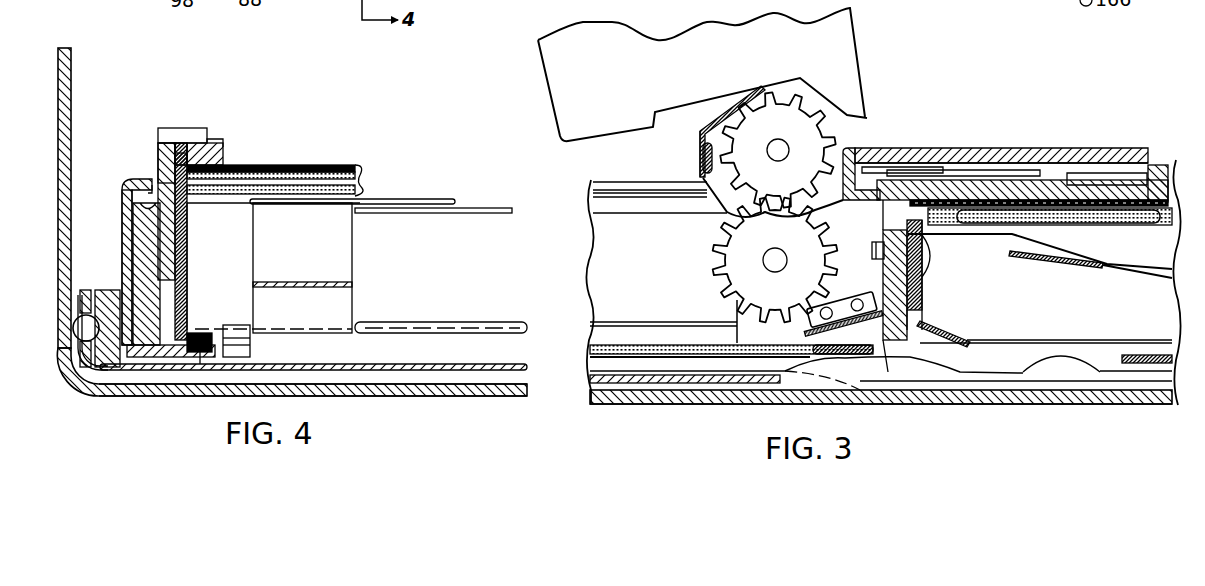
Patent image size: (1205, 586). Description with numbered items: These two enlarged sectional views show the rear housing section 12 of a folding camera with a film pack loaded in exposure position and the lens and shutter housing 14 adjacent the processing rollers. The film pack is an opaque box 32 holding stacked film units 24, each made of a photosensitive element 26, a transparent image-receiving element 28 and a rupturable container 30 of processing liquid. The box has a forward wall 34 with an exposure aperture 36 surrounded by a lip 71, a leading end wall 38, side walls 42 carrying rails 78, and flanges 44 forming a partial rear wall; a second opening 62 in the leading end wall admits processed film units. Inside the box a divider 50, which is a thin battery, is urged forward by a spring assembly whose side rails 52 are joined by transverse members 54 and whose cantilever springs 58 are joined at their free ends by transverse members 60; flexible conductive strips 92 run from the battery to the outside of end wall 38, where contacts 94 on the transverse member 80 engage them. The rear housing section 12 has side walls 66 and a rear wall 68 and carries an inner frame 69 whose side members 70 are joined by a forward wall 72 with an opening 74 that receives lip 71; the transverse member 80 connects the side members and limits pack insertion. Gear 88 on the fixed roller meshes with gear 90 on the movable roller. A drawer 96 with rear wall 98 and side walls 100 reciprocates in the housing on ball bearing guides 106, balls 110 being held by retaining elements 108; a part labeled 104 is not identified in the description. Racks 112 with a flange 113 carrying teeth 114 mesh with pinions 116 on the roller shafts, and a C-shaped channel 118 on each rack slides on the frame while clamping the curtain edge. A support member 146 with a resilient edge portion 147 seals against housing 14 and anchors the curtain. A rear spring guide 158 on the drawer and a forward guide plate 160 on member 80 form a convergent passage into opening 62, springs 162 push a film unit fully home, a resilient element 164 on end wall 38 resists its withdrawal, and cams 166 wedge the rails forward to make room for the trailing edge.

In FIG. 4, the rear housing section 12 is at (148, 402).
In FIG. 3, the rear housing section 12 is at (678, 408).
In FIG. 3, the housing 14 is at (545, 85).
In FIG. 4, the film unit 24 is at (362, 168).
In FIG. 3, the film unit 24 is at (623, 340).
In FIG. 4, the photosensitive element 26 is at (312, 184).
In FIG. 3, the photosensitive element 26 is at (697, 357).
In FIG. 4, the image-receiving element 28 is at (273, 170).
In FIG. 3, the image-receiving element 28 is at (660, 345).
In FIG. 3, the rupturable container 30 is at (1097, 202).
In FIG. 4, the container 32 is at (170, 182).
In FIG. 3, the container 32 is at (1022, 197).
In FIG. 4, the forward wall 34 is at (172, 165).
In FIG. 3, the forward wall 34 is at (983, 197).
In FIG. 4, the exposure aperture 36 is at (226, 166).
In FIG. 3, the exposure aperture 36 is at (1039, 203).
In FIG. 3, the leading end wall 38 is at (922, 300).
In FIG. 4, the side walls 42 is at (187, 284).
In FIG. 4, the flanges 44 is at (200, 355).
In FIG. 3, the flanges 44 is at (1148, 368).
In FIG. 3, the divider 50 is at (1148, 258).
In FIG. 4, the side rails 52 is at (200, 345).
In FIG. 3, the side rails 52 is at (775, 384).
In FIG. 4, the transverse members 54 is at (409, 324).
In FIG. 4, the cantilever springs 58 is at (312, 263).
In FIG. 3, the cantilever springs 58 is at (1113, 268).
In FIG. 4, the transverse members 60 is at (458, 213).
In FIG. 3, the transverse members 60 is at (1058, 265).
In FIG. 3, the second opening 62 is at (958, 340).
In FIG. 4, the side walls 66 is at (58, 177).
In FIG. 4, the rear wall 68 is at (133, 397).
In FIG. 3, the rear wall 68 is at (977, 404).
In FIG. 4, the inner frame 69 is at (158, 118).
In FIG. 3, the inner frame 69 is at (1163, 162).
In FIG. 4, the side members 70 is at (148, 236).
In FIG. 4, the lip 71 is at (217, 144).
In FIG. 4, the forward wall 72 is at (168, 143).
In FIG. 4, the opening 74 is at (208, 150).
In FIG. 4, the rails 78 is at (182, 251).
In FIG. 3, the transverse member 80 is at (887, 268).
In FIG. 3, the gear 88 is at (802, 98).
In FIG. 3, the gear 90 is at (716, 272).
In FIG. 3, the conductive strips 92 is at (926, 268).
In FIG. 3, the contacts 94 is at (875, 252).
In FIG. 4, the drawer 96 is at (375, 378).
In FIG. 4, the rear wall 98 is at (450, 366).
In FIG. 4, the side walls 100 is at (80, 370).
In FIG. 4, the ball 104 is at (73, 328).
In FIG. 4, the ball bearing guides 106 is at (100, 290).
In FIG. 4, the retaining elements 108 is at (80, 297).
In FIG. 4, the balls 110 is at (85, 345).
In FIG. 4, the racks 112 is at (122, 205).
In FIG. 3, the racks 112 is at (630, 254).
In FIG. 4, the flange 113 is at (148, 180).
In FIG. 4, the teeth 114 is at (130, 180).
In FIG. 3, the pinions 116 is at (702, 160).
In FIG. 4, the channel 118 is at (130, 220).
In FIG. 3, the support member 146 is at (696, 142).
In FIG. 3, the resilient edge portion 147 is at (758, 88).
In FIG. 4, the rear spring guide 158 is at (247, 327).
In FIG. 3, the rear spring guide 158 is at (843, 363).
In FIG. 3, the forward guide plate 160 is at (815, 320).
In FIG. 3, the springs 162 is at (922, 368).
In FIG. 3, the resilient element 164 is at (922, 318).
In FIG. 4, the cams 166 is at (218, 333).
In FIG. 3, the cams 166 is at (1067, 372).